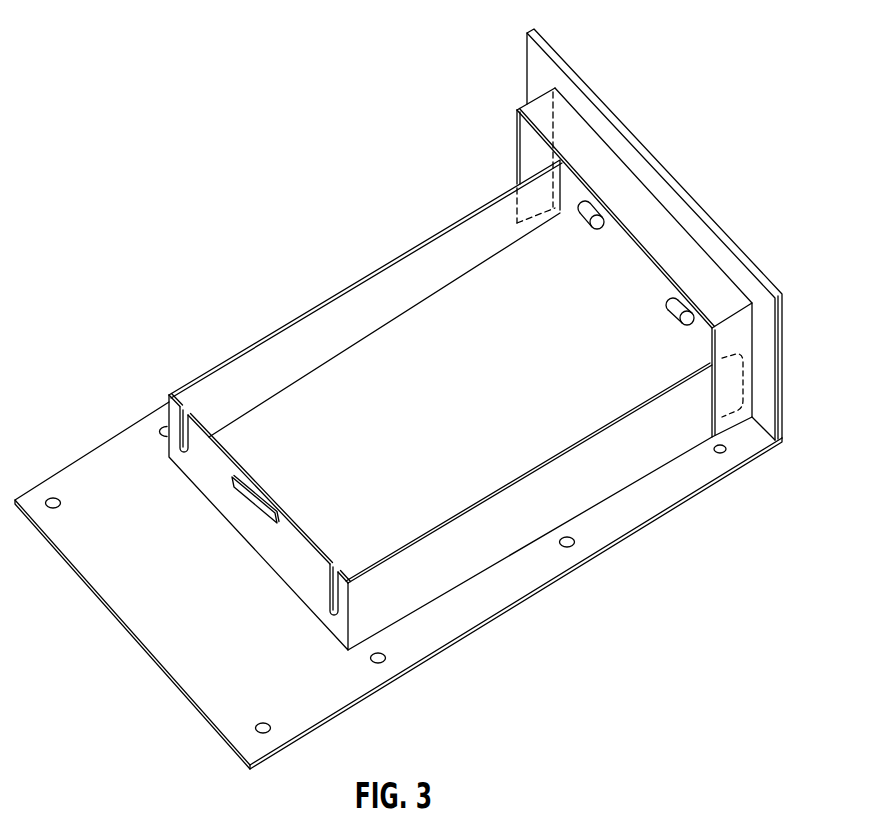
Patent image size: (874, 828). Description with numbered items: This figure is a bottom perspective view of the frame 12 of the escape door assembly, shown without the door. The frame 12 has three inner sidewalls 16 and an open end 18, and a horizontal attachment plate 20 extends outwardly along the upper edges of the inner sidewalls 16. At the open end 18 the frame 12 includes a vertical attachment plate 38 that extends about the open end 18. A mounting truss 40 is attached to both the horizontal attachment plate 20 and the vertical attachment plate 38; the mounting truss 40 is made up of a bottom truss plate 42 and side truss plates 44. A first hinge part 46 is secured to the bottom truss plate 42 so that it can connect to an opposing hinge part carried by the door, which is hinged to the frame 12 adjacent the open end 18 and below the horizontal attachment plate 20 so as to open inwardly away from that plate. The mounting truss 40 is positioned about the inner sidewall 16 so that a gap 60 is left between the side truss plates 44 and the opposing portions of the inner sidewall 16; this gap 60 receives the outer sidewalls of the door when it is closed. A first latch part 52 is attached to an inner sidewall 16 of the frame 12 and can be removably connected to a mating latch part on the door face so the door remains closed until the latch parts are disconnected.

The frame 12 is at (749, 146).
The inner sidewalls 16 is at (439, 405).
The open end 18 is at (642, 288).
The horizontal attachment plate 20 is at (613, 547).
The vertical attachment plate 38 is at (753, 268).
The mounting truss 40 is at (685, 227).
The bottom truss plate 42 is at (607, 183).
The side truss plates 44 is at (515, 127).
The first hinge part 46 is at (583, 218).
The first latch part 52 is at (245, 497).
The gap 60 is at (530, 160).